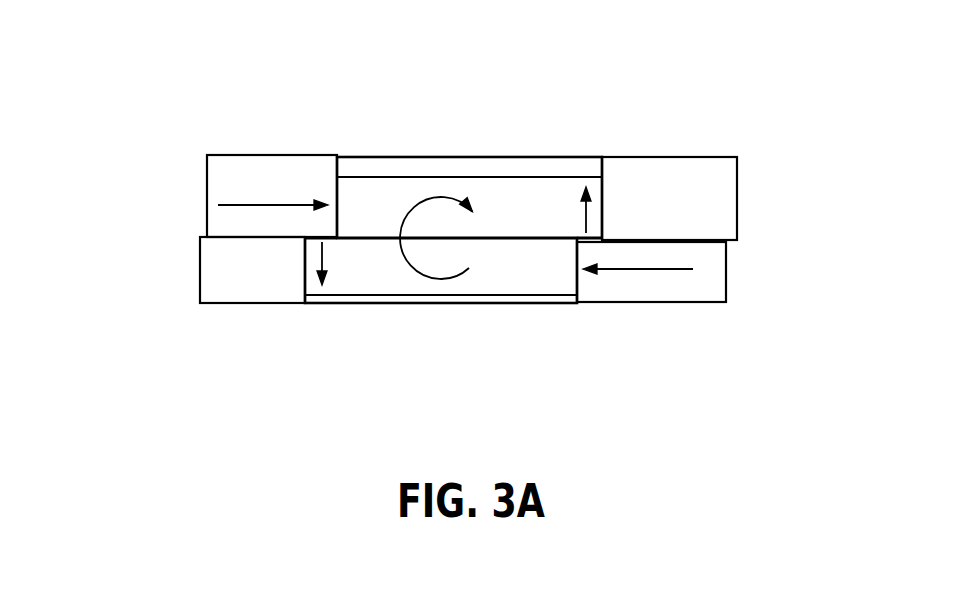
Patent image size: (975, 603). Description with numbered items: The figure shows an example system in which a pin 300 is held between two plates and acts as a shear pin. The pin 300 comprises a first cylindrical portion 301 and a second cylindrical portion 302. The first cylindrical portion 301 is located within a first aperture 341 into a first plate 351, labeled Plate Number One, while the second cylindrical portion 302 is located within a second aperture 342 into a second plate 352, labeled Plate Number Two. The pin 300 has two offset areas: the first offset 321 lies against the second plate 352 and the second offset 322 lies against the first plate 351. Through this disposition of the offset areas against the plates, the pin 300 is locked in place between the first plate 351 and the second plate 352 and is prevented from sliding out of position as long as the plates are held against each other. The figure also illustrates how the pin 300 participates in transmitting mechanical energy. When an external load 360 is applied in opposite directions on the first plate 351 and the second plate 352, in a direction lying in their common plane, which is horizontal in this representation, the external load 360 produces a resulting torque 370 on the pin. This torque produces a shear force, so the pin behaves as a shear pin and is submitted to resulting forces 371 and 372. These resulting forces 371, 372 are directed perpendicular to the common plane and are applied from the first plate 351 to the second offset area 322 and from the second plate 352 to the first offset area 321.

The pin 300 is at (492, 261).
The first cylindrical portion 301 is at (402, 183).
The second cylindrical portion 302 is at (564, 305).
The first offset 321 is at (609, 230).
The second offset 322 is at (293, 244).
The first aperture 341 is at (594, 159).
The second aperture 342 is at (403, 318).
The first plate 351 is at (315, 141).
The second plate 352 is at (248, 318).
The external load 360 is at (840, 272).
The resulting torque 370 is at (436, 238).
The resulting force 371 is at (559, 210).
The resulting force 372 is at (346, 263).